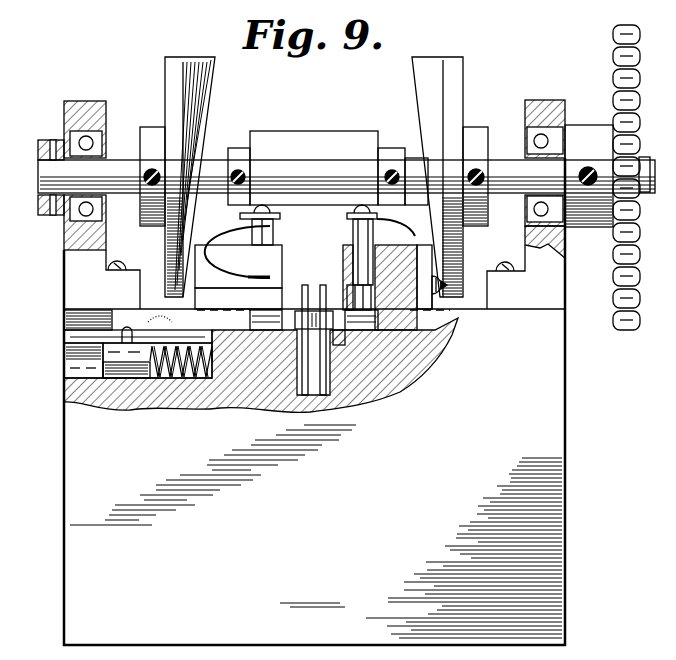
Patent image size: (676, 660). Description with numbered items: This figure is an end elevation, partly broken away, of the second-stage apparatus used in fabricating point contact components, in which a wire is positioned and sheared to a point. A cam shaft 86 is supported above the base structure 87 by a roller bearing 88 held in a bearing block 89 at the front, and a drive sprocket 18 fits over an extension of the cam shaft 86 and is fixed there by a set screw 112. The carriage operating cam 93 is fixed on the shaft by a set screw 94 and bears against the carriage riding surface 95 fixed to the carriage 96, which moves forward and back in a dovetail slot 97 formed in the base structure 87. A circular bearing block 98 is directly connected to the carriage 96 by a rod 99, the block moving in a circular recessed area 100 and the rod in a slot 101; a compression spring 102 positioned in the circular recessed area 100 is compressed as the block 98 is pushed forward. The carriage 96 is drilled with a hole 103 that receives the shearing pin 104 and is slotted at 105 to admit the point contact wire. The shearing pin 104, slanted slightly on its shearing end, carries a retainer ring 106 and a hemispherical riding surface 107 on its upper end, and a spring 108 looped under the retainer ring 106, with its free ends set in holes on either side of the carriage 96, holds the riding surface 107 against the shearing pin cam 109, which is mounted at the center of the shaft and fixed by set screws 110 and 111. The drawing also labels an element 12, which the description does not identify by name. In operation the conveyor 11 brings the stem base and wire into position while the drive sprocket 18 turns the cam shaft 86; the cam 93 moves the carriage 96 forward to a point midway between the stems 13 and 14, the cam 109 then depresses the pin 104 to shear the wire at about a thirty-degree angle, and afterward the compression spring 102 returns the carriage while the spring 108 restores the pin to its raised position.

The conveyor 11 is at (340, 335).
The guide block 12 is at (330, 332).
The stem 13 is at (305, 395).
The stem 14 is at (323, 395).
The drive sprocket 18 is at (641, 266).
The cam shaft 86 is at (413, 160).
The base structure 87 is at (566, 450).
The roller bearing 88 is at (543, 135).
The bearing block 89 is at (533, 104).
The carriage operating cam 93 is at (464, 72).
The set screw 94 is at (477, 170).
The carriage riding surface 95 is at (437, 296).
The carriage 96 is at (432, 310).
The dovetail slot 97 is at (108, 319).
The circular bearing block 98 is at (133, 378).
The rod 99 is at (126, 330).
The circular recessed area 100 is at (80, 366).
The slot 101 is at (80, 338).
The compression spring 102 is at (190, 378).
The hole 103 is at (380, 330).
The shearing pin 104 is at (358, 240).
The slot 105 is at (350, 288).
The retainer ring 106 is at (346, 218).
The hemispherical riding surface 107 is at (362, 208).
The spring 108 is at (317, 240).
The shearing pin cam 109 is at (300, 131).
The set screw 110 is at (391, 170).
The set screw 111 is at (238, 170).
The set screw 112 is at (588, 167).